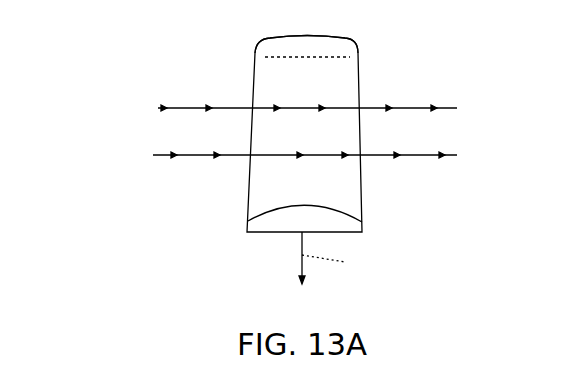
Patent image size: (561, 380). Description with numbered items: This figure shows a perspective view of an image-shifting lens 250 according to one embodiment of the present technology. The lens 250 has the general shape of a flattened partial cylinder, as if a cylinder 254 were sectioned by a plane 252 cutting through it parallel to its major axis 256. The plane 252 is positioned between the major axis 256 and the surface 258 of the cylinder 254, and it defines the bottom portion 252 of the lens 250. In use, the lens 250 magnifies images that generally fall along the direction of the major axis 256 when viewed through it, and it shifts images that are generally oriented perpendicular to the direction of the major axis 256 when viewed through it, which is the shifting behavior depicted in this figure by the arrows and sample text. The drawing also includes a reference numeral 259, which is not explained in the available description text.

The image-shifting lens 250 is at (113, 52).
The plane 252 is at (363, 87).
The cylinder 254 is at (352, 266).
The major axis 256 is at (250, 78).
The surface 258 is at (252, 203).
The central axis stem 259 is at (337, 258).